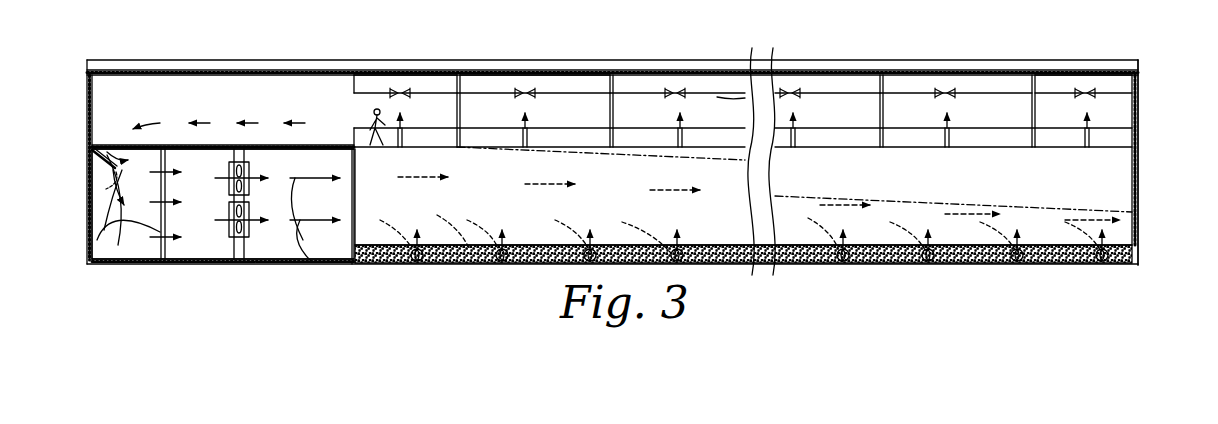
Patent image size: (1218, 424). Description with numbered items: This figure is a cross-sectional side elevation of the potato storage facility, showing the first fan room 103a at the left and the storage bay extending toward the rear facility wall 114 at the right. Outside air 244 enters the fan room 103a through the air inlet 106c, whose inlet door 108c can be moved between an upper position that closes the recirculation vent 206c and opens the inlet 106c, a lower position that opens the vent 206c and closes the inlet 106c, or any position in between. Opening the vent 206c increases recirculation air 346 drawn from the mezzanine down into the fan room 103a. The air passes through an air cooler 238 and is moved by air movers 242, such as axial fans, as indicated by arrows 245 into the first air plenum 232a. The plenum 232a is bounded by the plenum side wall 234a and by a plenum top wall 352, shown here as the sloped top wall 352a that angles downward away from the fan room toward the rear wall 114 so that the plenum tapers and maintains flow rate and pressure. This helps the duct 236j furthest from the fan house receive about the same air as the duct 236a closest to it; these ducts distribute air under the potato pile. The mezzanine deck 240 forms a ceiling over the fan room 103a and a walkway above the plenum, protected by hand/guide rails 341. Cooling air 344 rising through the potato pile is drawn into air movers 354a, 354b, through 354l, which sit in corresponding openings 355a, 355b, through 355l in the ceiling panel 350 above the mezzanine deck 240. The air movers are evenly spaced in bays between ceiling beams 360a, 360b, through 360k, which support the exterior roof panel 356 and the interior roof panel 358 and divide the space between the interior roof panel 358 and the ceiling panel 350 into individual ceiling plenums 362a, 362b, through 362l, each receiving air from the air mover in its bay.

The first fan room 103a is at (117, 250).
The air inlet 106c is at (90, 152).
The inlet door 108c is at (100, 186).
The rear facility wall 114 is at (1142, 230).
The recirculation vent 206c is at (114, 145).
The first air plenum 232a is at (440, 250).
The plenum side wall 234a is at (350, 250).
The duct 236a is at (418, 262).
The duct 236j is at (1105, 262).
The air cooler 238 is at (167, 248).
The mezzanine deck 240 is at (433, 147).
The air movers 242 is at (249, 190).
The outside air 244 is at (92, 238).
The air flow 245 is at (303, 240).
The hand/guide rails 341 is at (427, 128).
The cooling air 344 is at (504, 245).
The recirculation air 346 is at (207, 120).
The ceiling panel 350 is at (755, 48).
The plenum top wall 352 is at (575, 158).
The plenum top wall 352a is at (912, 200).
The air mover 354a is at (403, 86).
The air mover 354b is at (527, 90).
The air mover 354l is at (1090, 92).
The opening 355a is at (388, 92).
The opening 355b is at (510, 100).
The opening 355l is at (1078, 92).
The exterior roof panel 356 is at (567, 75).
The interior roof panel 358 is at (600, 75).
The ceiling beam 360a is at (363, 75).
The ceiling beam 360b is at (470, 78).
The ceiling beam 360k is at (1045, 75).
The ceiling plenum 362a is at (418, 80).
The ceiling plenum 362b is at (578, 88).
The ceiling plenum 362l is at (1125, 78).